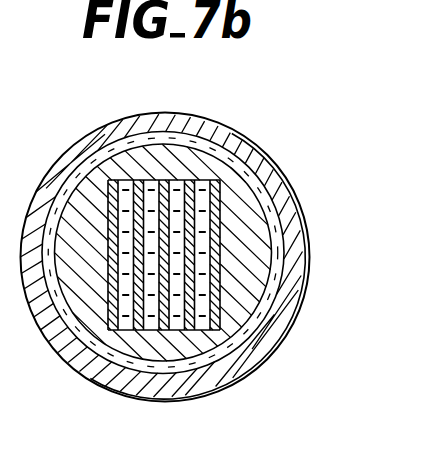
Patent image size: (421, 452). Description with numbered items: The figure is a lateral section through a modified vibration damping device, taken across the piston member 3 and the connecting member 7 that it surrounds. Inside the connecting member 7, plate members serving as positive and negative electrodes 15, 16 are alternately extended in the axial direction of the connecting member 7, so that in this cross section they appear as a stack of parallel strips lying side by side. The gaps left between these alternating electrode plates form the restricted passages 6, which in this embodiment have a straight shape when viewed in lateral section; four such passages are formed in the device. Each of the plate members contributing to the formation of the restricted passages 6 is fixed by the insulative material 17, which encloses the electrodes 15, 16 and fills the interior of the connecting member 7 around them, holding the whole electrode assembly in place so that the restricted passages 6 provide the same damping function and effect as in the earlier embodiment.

The piston member 3 is at (122, 126).
The connecting member 7 is at (204, 142).
The positive electrode 15 is at (186, 218).
The negative electrode 16 is at (205, 293).
The insulative material 17 is at (244, 246).
The restricted passage 6 is at (176, 330).